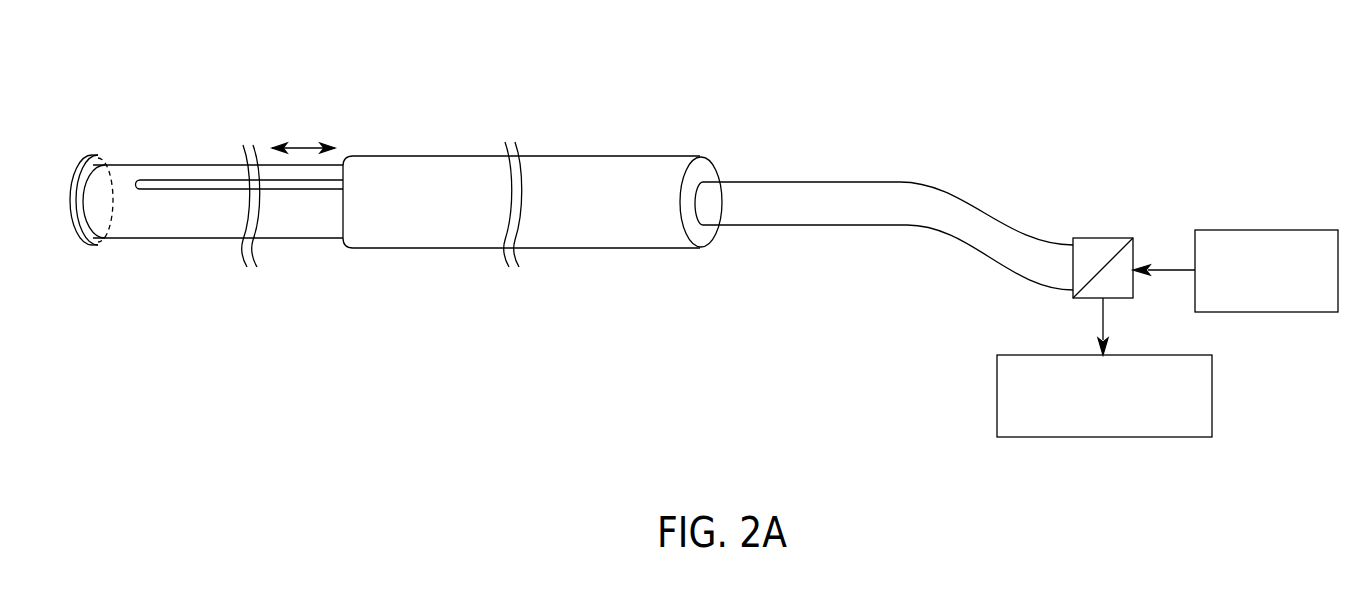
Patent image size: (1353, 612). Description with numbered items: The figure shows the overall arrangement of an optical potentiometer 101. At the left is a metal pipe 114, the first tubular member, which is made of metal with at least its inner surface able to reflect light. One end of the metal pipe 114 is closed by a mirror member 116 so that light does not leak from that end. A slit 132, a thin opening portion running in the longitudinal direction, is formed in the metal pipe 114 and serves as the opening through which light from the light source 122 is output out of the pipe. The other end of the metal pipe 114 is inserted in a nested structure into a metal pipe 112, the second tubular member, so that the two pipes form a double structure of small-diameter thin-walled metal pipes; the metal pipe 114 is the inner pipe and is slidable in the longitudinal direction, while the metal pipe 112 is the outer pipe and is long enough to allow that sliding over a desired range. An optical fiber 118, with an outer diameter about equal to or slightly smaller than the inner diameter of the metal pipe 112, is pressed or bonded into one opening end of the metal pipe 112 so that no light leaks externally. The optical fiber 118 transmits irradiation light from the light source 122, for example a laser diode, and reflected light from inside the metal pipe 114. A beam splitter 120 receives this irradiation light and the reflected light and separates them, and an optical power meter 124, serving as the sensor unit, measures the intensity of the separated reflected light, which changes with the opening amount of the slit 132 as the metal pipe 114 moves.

The optical potentiometer 101 is at (537, 80).
The metal pipe 112 is at (435, 250).
The metal pipe 114 is at (193, 228).
The mirror member 116 is at (98, 247).
The optical fiber 118 is at (877, 193).
The beam splitter 120 is at (1106, 238).
The light source 122 is at (1302, 312).
The optical power meter 124 is at (1138, 437).
The slit 132 is at (172, 182).